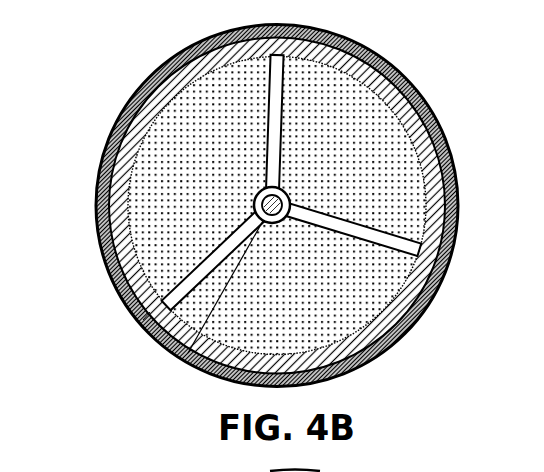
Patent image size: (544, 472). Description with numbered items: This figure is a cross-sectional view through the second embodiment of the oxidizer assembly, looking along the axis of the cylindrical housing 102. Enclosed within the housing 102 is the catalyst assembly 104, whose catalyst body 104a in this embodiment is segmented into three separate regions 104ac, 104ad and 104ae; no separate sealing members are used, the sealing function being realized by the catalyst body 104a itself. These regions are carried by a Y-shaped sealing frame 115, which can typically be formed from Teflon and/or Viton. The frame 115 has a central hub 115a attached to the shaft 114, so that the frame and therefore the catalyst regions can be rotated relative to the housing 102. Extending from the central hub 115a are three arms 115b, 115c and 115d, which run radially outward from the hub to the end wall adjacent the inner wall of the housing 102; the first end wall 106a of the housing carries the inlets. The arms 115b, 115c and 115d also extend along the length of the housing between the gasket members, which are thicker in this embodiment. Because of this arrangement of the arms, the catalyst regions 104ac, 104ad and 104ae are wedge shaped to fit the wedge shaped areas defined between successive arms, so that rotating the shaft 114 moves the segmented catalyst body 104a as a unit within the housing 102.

The housing 102 is at (279, 206).
The catalyst assembly 104 is at (315, 205).
The catalyst body 104a is at (267, 225).
The catalyst region 104ac is at (153, 181).
The catalyst region 104ad is at (388, 153).
The catalyst region 104ae is at (301, 299).
The first end wall 106a is at (277, 200).
The shaft 114 is at (300, 196).
The Y-shaped sealing frame 115 is at (155, 260).
The central hub 115a is at (193, 301).
The arm 115b is at (106, 331).
The arm 115c is at (398, 258).
The arm 115d is at (218, 102).